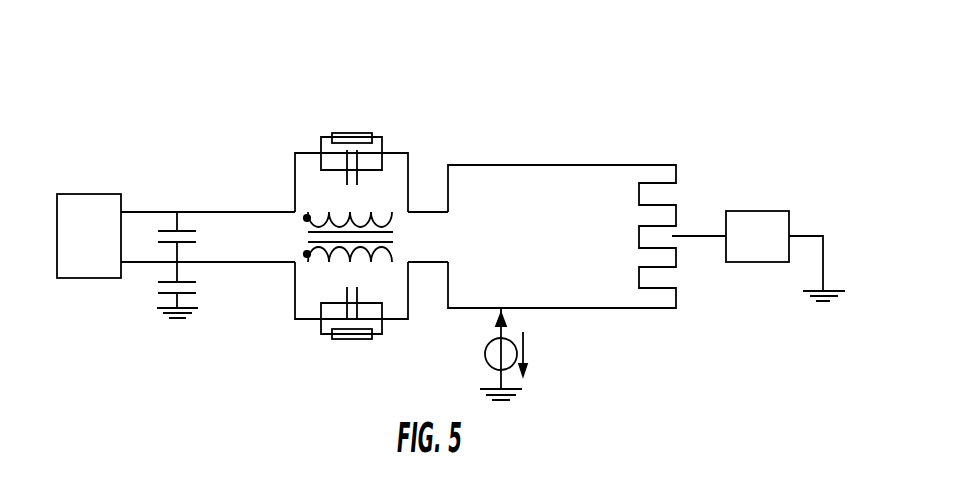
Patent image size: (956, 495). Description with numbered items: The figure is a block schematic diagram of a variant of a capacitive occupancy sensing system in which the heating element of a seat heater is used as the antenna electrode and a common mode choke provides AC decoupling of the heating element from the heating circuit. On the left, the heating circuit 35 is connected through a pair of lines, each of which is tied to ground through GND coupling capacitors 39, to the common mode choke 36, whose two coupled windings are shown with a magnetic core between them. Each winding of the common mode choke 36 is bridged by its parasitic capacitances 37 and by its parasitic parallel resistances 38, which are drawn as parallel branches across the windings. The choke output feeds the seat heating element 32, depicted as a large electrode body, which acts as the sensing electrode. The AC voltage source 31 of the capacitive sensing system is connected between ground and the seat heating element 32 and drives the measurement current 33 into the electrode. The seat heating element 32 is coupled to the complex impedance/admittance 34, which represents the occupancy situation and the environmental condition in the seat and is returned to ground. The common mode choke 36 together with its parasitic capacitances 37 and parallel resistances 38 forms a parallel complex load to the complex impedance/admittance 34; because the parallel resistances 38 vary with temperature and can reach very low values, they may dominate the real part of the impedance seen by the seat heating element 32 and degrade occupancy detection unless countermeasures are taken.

The AC voltage source 31 is at (494, 366).
The seat heating element 32 is at (573, 241).
The measurement current 33 is at (490, 348).
The complex impedance/admittance 34 is at (758, 256).
The heating circuit 35 is at (89, 236).
The common mode choke 36 is at (351, 236).
The parasitic capacitances 37 is at (363, 235).
The parasitic parallel resistances 38 is at (351, 238).
The GND coupling capacitors 39 is at (188, 265).